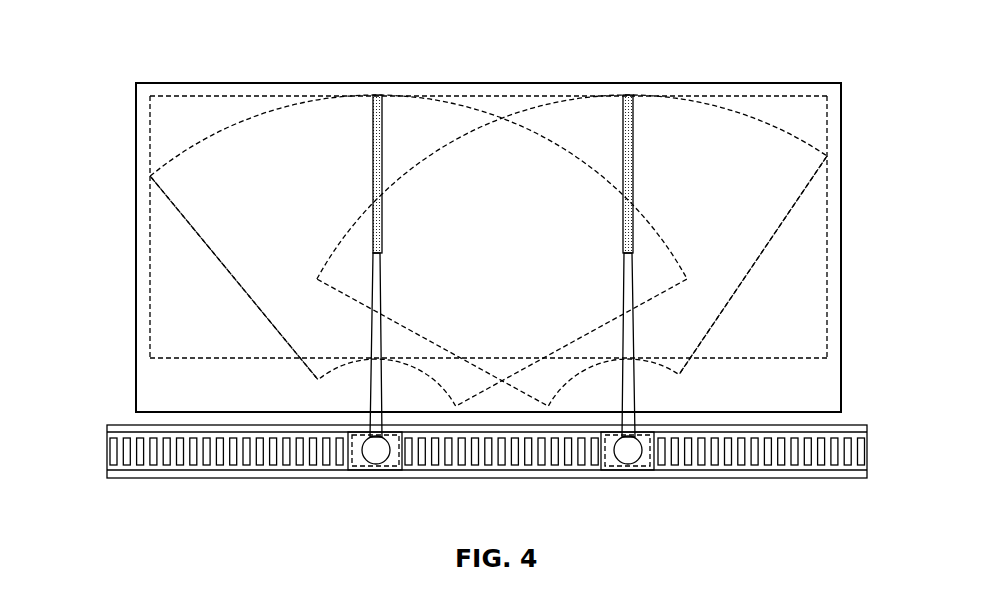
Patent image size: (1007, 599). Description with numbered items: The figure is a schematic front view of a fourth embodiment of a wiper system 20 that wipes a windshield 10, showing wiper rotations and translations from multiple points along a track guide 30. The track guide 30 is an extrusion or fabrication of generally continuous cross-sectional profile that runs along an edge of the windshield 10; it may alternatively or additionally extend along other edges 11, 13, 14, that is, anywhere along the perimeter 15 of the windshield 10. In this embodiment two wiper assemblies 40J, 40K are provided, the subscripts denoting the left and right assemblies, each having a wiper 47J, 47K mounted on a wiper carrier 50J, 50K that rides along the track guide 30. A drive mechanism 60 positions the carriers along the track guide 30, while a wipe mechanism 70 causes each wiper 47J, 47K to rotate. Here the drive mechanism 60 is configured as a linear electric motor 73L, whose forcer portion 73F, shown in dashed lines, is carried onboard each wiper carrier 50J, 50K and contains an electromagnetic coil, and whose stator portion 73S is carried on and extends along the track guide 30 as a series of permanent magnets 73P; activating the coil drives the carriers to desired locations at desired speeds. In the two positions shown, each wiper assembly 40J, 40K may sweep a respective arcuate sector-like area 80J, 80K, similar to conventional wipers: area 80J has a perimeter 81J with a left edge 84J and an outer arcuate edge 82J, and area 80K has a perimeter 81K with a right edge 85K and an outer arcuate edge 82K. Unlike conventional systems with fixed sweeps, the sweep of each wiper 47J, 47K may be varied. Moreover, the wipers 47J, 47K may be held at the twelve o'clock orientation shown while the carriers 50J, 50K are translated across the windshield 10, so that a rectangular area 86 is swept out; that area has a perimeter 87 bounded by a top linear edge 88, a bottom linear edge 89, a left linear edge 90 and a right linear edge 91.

The windshield 10 is at (137, 145).
The top edge 11 is at (488, 48).
The edge 13 is at (137, 228).
The edge 14 is at (842, 170).
The perimeter 15 is at (523, 83).
The wiper system 20 is at (476, 216).
The track guide 30 is at (490, 462).
The left wiper assembly 40J is at (407, 493).
The right wiper assembly 40K is at (667, 493).
The left wiper 47J is at (335, 218).
The right wiper 47K is at (714, 260).
The left wiper carrier 50J is at (391, 470).
The right wiper carrier 50K is at (647, 470).
The drive mechanism 60 is at (486, 212).
The wipe mechanism 70 is at (486, 212).
The linear electric motor 73L is at (891, 437).
The stator portion 73S is at (487, 483).
The permanent magnets 73P is at (272, 463).
The forcer portion 73F is at (363, 470).
The left arcuate sector-like area 80J is at (213, 162).
The right arcuate sector-like area 80K is at (773, 145).
The perimeter 81J is at (418, 215).
The outer arcuate edge 82J is at (233, 120).
The left edge 84J is at (250, 298).
The perimeter 81K is at (572, 215).
The outer arcuate edge 82K is at (767, 122).
The right edge 85K is at (762, 253).
The rectangular area 86 is at (178, 108).
The perimeter 87 is at (488, 60).
The top linear edge 88 is at (497, 95).
The bottom linear edge 89 is at (270, 358).
The left linear edge 90 is at (150, 295).
The right linear edge 91 is at (827, 245).